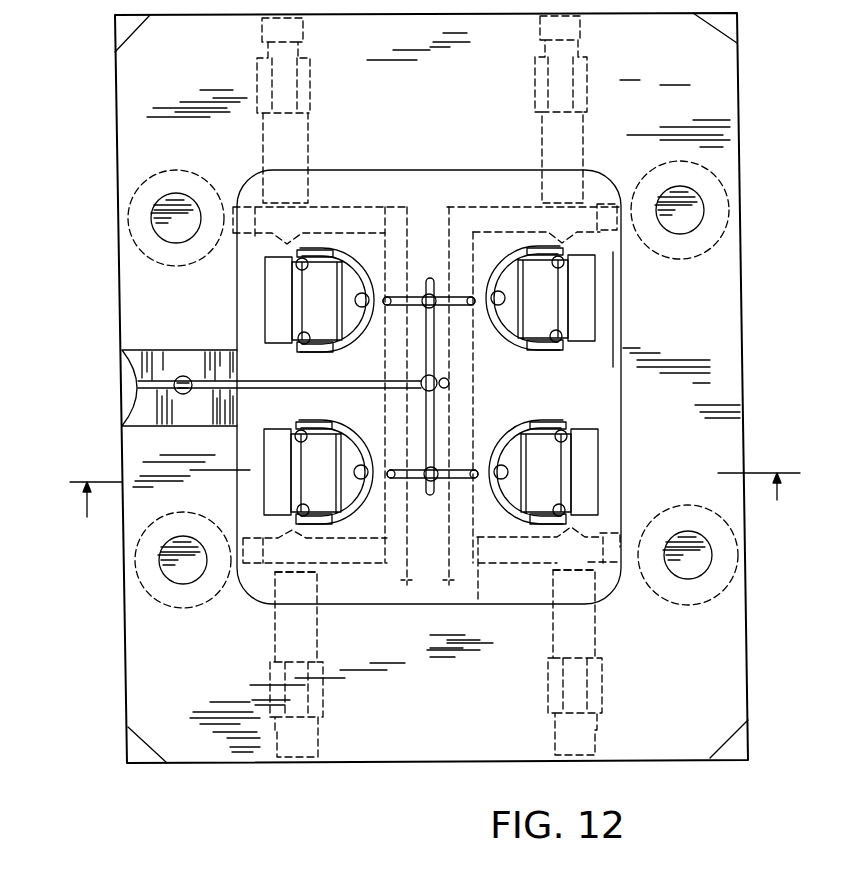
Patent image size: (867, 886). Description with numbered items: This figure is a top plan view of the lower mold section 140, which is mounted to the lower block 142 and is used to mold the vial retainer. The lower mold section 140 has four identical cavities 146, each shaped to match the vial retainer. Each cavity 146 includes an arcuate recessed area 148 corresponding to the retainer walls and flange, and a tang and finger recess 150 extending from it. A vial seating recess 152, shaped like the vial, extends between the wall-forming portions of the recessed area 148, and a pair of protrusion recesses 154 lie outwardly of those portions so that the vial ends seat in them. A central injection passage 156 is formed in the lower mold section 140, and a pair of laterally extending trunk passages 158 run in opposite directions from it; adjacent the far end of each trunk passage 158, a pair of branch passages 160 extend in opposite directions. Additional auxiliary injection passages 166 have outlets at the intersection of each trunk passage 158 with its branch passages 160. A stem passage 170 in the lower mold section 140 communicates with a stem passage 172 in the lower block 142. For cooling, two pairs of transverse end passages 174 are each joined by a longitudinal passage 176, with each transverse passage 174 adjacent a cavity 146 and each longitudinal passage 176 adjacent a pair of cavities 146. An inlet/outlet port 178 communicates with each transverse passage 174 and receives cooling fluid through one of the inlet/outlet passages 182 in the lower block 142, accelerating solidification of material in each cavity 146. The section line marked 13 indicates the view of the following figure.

The section line 13- 13 is at (435, 510).
The lower mold section 140 is at (238, 296).
The lower block 142 is at (126, 630).
The cavity 146 is at (344, 249).
The arcuate recessed area 148 is at (372, 245).
The tang and finger recess 150 is at (277, 313).
The vial seating recess 152 is at (312, 297).
The protrusion recess 154 is at (300, 258).
The central injection passage 156 is at (438, 408).
The trunk passage 158 is at (433, 345).
The branch passage 160 is at (452, 300).
The auxiliary injection passage 166 is at (427, 306).
The stem passage 170 is at (330, 388).
The stem passage 172 is at (203, 390).
The transverse end passage 174 is at (358, 238).
The longitudinal passage 176 is at (446, 228).
The inlet/outlet port 178 is at (277, 185).
The inlet/outlet passage 182 is at (277, 137).